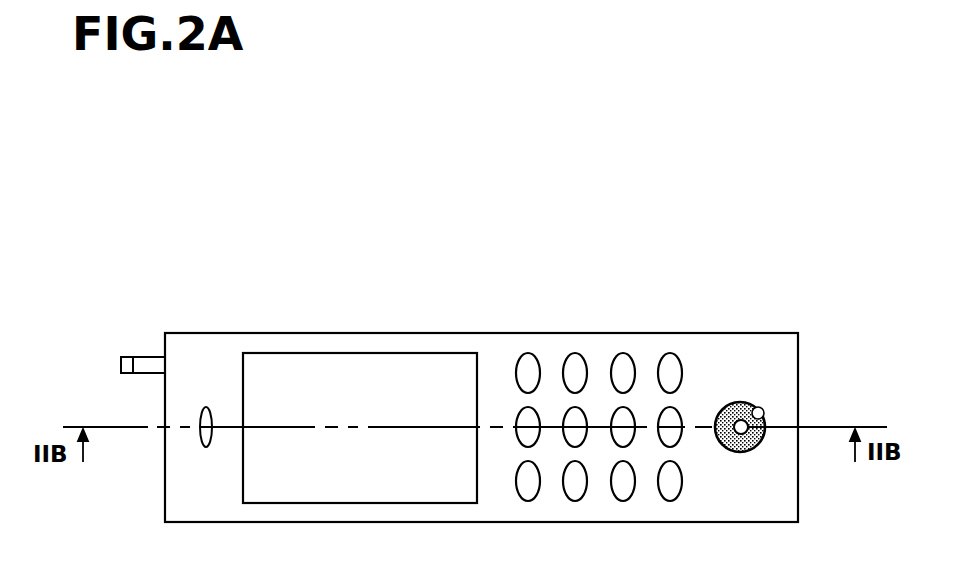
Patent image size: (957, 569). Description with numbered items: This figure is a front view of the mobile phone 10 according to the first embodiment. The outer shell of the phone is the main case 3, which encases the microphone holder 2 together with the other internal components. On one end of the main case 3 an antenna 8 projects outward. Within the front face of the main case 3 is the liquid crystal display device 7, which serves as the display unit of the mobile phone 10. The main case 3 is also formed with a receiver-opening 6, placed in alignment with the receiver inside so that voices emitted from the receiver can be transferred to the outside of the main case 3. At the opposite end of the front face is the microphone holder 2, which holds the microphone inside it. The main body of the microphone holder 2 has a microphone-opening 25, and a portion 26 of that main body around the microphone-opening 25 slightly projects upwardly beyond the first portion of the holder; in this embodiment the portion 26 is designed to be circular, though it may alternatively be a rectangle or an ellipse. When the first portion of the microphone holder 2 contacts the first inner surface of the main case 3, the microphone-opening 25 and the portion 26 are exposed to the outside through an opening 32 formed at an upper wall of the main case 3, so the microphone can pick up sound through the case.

The mobile phone 10 is at (272, 193).
The main case 3 is at (487, 333).
The antenna 8 is at (145, 357).
The receiver-opening 6 is at (205, 407).
The liquid crystal display device 7 is at (365, 353).
The microphone holder 2 is at (724, 405).
The microphone-opening 25 is at (744, 438).
The portion 26 is at (751, 410).
The opening 32 is at (767, 424).